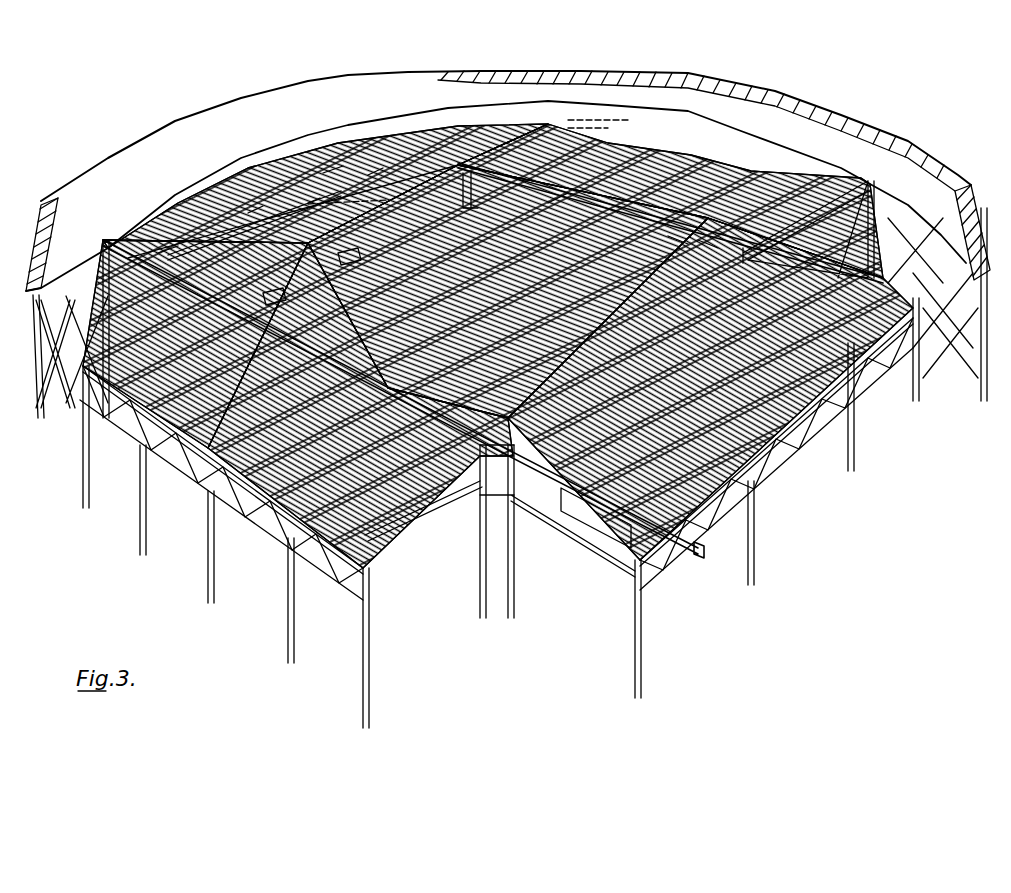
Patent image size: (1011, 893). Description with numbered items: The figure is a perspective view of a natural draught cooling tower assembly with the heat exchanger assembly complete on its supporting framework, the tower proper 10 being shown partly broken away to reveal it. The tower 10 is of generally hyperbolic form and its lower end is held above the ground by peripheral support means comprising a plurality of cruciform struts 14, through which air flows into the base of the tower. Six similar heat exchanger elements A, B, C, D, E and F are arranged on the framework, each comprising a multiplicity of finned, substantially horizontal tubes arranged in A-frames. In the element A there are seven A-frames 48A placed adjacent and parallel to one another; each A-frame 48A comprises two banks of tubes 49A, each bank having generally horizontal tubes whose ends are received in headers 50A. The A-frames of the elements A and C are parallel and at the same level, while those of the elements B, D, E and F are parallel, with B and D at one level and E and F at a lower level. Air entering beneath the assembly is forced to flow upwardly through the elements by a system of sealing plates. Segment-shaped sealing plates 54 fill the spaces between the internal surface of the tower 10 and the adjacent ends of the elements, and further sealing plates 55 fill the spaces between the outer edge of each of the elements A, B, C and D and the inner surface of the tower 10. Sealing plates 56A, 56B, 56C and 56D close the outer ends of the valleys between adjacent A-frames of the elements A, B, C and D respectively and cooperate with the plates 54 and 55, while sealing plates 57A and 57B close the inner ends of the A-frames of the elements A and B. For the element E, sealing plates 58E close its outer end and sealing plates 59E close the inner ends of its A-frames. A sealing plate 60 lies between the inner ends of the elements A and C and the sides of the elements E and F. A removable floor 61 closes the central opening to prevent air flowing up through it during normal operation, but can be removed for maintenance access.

The tower proper 10 is at (843, 104).
The cruciform struts 14 is at (945, 345).
The A-frames 48A is at (316, 174).
The bank of tubes 49A is at (361, 166).
The headers 50A is at (300, 195).
The sealing plates 54 is at (482, 118).
The sealing plates 55 is at (246, 157).
The sealing plates 56A is at (240, 210).
The sealing plates 56B is at (811, 173).
The sealing plates 56C is at (846, 342).
The sealing plates 56D is at (330, 548).
The sealing plates 57A is at (288, 250).
The sealing plates 57B is at (660, 226).
The sealing plates 58E is at (544, 198).
The sealing plates 59E is at (420, 205).
The sealing plate 60 is at (488, 531).
The removable floor 61 is at (396, 216).
The heat exchanger element A is at (320, 172).
The heat exchanger element B is at (650, 172).
The heat exchanger element C is at (790, 406).
The heat exchanger element D is at (266, 516).
The heat exchanger element E is at (491, 229).
The heat exchanger element F is at (187, 468).